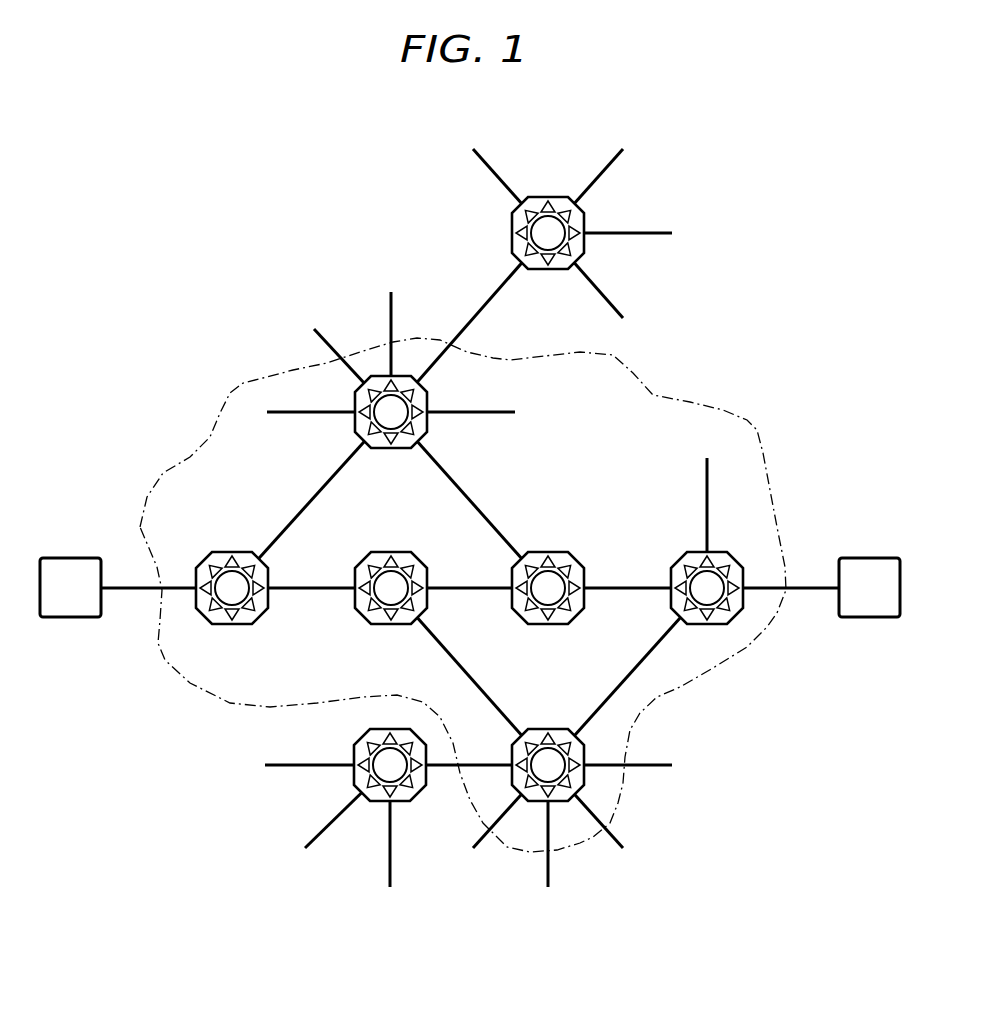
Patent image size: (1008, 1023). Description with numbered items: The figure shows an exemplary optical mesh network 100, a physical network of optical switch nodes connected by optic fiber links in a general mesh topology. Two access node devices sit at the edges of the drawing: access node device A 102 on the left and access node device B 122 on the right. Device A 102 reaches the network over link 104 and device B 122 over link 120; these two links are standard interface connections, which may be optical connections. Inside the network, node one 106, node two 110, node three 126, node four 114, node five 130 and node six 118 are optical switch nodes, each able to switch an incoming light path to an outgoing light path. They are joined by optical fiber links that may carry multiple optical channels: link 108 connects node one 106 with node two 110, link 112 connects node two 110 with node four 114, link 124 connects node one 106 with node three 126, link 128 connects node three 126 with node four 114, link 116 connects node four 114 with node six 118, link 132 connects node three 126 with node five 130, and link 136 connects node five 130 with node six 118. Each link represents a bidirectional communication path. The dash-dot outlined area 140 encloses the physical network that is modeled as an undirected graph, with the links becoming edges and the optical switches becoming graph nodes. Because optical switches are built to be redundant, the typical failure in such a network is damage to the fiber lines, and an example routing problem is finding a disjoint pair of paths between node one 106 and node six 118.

The optical mesh network 100 is at (816, 256).
The access node device A 102 is at (66, 557).
The link 104 is at (125, 590).
The node 1 106 is at (232, 551).
The link 108 is at (306, 505).
The node 2 110 is at (428, 405).
The link 112 is at (471, 490).
The node 4 114 is at (548, 551).
The link 116 is at (620, 590).
The node 6 118 is at (684, 563).
The link 120 is at (812, 590).
The access node device B 122 is at (866, 557).
The link 124 is at (313, 585).
The node 3 126 is at (391, 551).
The link 128 is at (454, 585).
The node 5 130 is at (516, 745).
The link 132 is at (440, 645).
The link 136 is at (594, 712).
The outlined area 140 is at (752, 422).